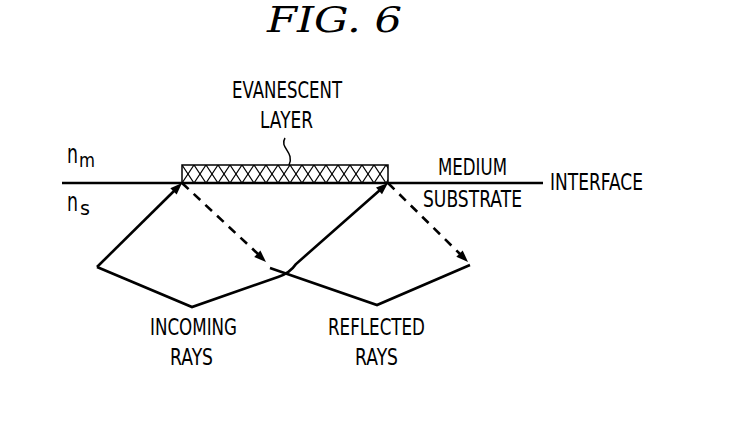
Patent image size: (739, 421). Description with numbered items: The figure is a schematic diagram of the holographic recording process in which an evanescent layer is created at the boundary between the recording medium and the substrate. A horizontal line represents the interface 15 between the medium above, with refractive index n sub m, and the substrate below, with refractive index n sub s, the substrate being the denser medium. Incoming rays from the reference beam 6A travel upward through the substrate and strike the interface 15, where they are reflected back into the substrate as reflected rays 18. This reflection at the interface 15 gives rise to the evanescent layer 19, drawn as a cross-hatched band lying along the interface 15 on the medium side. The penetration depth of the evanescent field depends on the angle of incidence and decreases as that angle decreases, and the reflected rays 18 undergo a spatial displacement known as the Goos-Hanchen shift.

The evanescent layer 19 is at (372, 165).
The interface 15 is at (532, 181).
The reference beam 6A is at (113, 251).
The reflected rays 18 is at (455, 243).